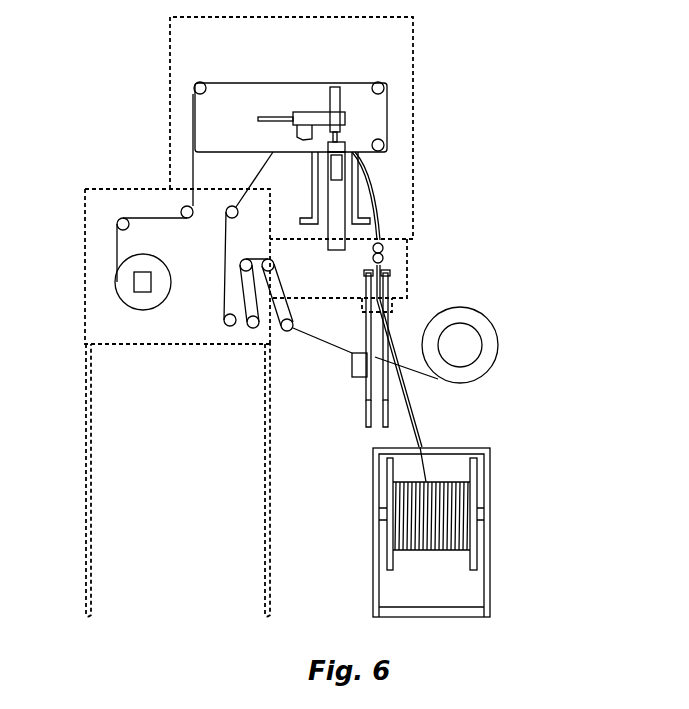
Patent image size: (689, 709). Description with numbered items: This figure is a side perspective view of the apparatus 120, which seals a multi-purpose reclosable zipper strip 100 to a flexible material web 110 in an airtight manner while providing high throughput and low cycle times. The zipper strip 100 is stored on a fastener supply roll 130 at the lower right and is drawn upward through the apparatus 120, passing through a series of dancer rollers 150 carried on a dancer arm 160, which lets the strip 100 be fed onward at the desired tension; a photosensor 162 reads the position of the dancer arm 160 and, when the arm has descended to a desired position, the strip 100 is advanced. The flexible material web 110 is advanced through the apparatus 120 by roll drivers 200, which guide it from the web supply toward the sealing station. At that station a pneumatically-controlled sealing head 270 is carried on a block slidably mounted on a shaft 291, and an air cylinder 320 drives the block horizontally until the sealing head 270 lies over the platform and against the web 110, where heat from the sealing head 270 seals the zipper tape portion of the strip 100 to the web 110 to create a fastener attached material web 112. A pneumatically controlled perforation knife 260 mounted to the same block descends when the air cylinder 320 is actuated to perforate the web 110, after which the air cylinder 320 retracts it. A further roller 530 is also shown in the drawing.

The apparatus 120 is at (548, 60).
The fastener attached material web 112 is at (387, 100).
The roll drivers 200 is at (195, 85).
The flexible material web 110 is at (226, 316).
The shaft 291 is at (290, 113).
The perforation knife 260 is at (300, 133).
The air cylinder 320 is at (341, 89).
The sealing head 270 is at (347, 147).
The multi-purpose reclosable zipper strip 100 is at (373, 192).
The dancer rollers 150 is at (370, 428).
The dancer arm 160 is at (370, 402).
The photosensor 162 is at (355, 372).
The roller 530 is at (468, 338).
The fastener supply roll 130 is at (476, 555).